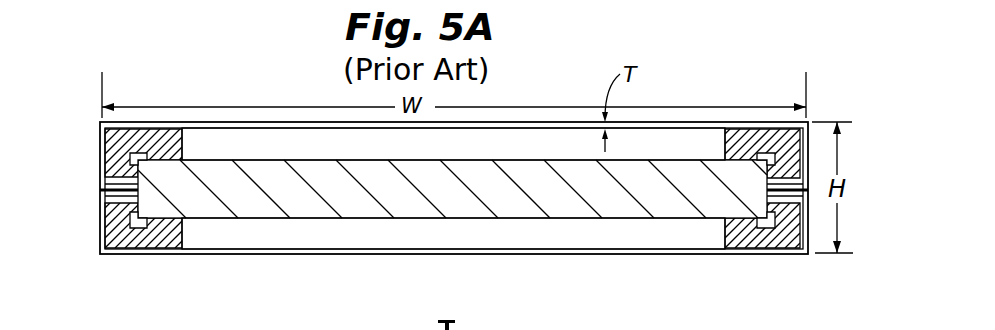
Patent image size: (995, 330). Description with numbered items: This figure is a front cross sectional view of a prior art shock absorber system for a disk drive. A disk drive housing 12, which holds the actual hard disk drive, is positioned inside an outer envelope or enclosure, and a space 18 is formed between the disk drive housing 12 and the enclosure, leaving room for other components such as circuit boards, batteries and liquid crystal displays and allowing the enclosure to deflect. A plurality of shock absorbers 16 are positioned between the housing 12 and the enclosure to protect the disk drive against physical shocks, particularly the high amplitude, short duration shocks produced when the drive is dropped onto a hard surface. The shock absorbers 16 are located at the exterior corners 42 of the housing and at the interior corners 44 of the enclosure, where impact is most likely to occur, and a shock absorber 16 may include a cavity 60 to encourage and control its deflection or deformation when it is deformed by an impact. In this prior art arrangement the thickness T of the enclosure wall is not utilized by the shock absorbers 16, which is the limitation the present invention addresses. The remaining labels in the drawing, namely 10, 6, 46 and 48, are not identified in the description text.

The prior art device 10 is at (447, 165).
The upper layer 6 is at (255, 138).
The disk drive housing 12 is at (270, 212).
The space 18 is at (560, 230).
The shock absorber 16 is at (797, 128).
The exterior corner 42 is at (134, 228).
The interior corner 44 is at (100, 122).
The upper end block 46 is at (100, 157).
The lower end block 48 is at (100, 218).
The cavity 60 is at (768, 153).